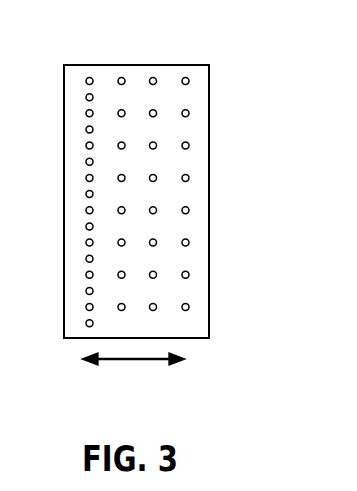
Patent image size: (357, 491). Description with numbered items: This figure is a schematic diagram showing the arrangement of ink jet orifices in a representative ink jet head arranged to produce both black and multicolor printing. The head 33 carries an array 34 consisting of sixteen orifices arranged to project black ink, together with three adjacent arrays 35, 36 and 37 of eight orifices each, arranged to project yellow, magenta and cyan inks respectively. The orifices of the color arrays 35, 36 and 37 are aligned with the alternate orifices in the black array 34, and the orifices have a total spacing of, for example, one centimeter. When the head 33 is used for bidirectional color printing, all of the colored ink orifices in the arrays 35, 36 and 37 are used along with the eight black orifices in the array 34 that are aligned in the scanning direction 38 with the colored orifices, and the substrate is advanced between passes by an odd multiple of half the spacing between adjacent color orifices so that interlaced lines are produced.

The head 33 is at (216, 197).
The array 34 is at (90, 55).
The array 35 is at (122, 55).
The array 36 is at (154, 55).
The array 37 is at (187, 55).
The scanning direction 38 is at (143, 360).